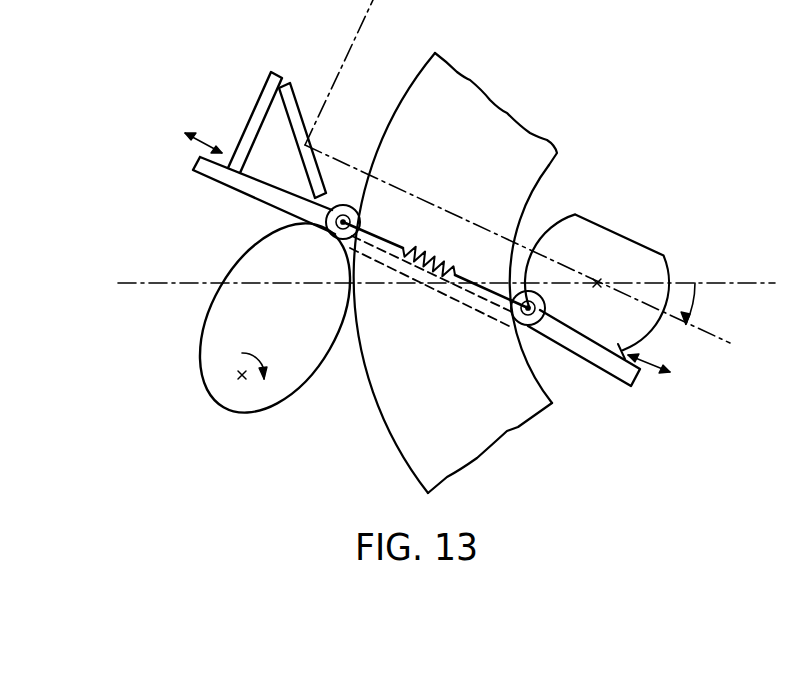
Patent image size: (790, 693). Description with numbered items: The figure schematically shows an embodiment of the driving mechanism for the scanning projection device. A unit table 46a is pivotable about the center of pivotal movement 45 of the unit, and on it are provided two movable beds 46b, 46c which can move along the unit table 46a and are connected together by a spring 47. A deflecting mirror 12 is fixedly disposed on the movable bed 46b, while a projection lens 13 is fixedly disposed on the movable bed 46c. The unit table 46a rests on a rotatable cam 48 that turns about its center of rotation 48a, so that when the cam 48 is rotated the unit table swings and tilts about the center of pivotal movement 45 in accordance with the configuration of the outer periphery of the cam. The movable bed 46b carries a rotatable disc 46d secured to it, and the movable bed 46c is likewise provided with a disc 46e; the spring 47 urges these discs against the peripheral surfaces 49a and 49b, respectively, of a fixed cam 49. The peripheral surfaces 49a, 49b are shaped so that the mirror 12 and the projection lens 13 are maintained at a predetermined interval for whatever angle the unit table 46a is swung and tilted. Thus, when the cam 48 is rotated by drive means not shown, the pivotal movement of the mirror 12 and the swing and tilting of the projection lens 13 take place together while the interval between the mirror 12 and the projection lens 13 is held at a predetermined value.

The deflecting mirror 12 is at (290, 100).
The projection lens 13 is at (601, 231).
The center of pivotal movement 45 is at (597, 281).
The unit table 46a is at (637, 378).
The movable bed 46b is at (248, 131).
The movable bed 46c is at (613, 348).
The rotatable disc 46d is at (358, 206).
The disc 46e is at (522, 329).
The spring 47 is at (431, 254).
The rotatable cam 48 is at (227, 271).
The center of rotation 48a is at (239, 377).
The fixed cam 49 is at (520, 133).
The peripheral surface 49a is at (386, 427).
The peripheral surface 49b is at (544, 171).